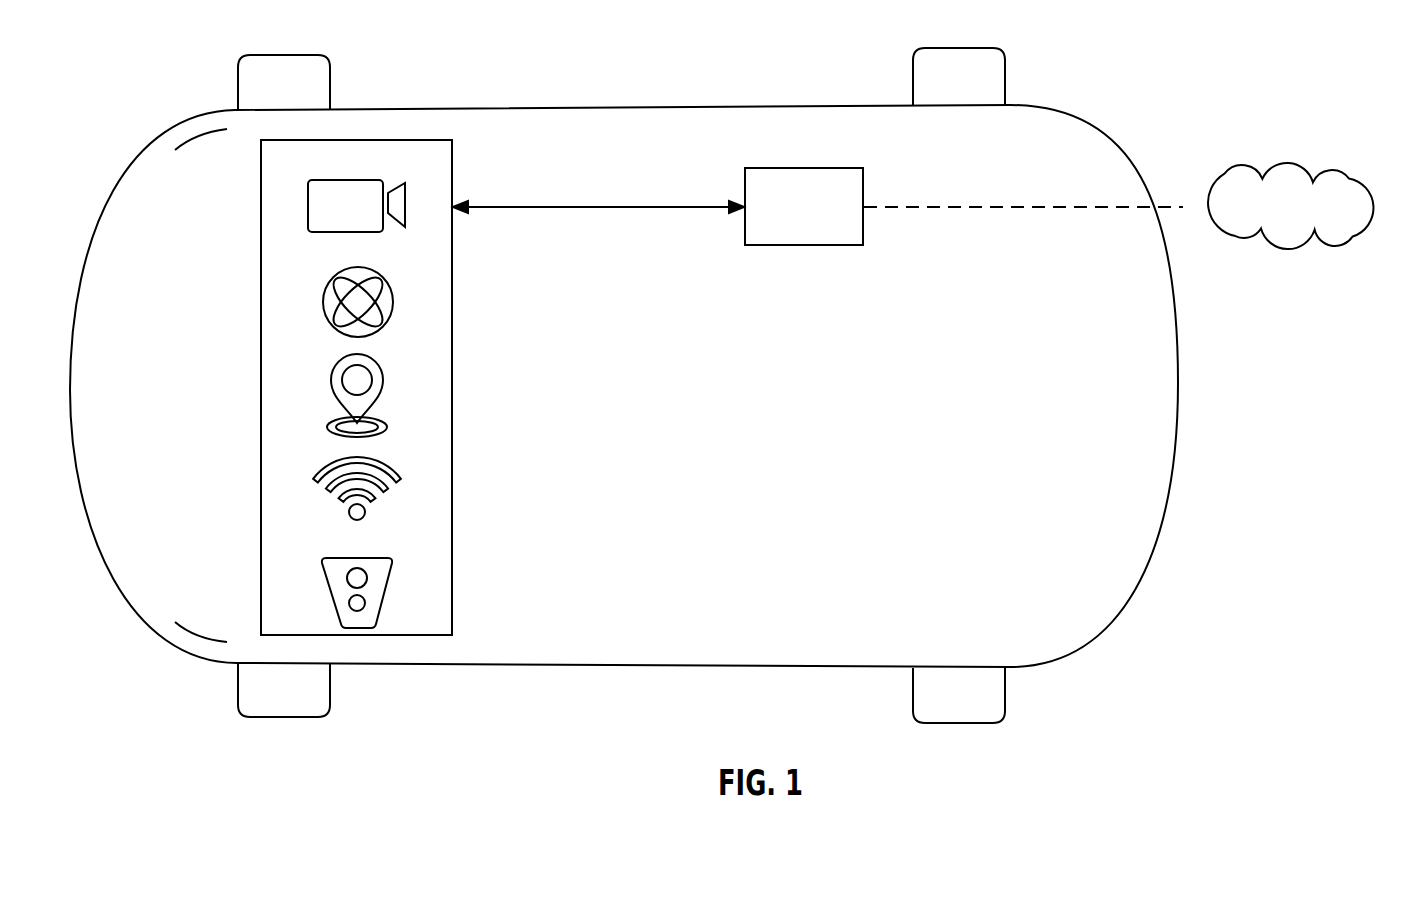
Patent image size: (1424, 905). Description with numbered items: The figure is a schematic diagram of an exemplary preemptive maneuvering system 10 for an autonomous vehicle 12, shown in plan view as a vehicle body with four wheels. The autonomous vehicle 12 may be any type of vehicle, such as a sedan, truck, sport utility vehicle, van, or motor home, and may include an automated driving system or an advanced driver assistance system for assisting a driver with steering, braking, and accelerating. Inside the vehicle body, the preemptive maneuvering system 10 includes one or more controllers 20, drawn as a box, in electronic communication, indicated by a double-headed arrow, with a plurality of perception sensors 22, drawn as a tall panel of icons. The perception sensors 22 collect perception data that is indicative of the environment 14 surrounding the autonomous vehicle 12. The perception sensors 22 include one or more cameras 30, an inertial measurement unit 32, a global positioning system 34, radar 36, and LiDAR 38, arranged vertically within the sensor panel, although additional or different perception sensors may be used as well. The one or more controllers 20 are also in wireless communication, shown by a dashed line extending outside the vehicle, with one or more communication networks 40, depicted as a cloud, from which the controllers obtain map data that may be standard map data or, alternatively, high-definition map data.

The preemptive maneuvering system 10 is at (693, 134).
The autonomous vehicle 12 is at (543, 665).
The environment 14 is at (1336, 116).
The controller 20 is at (820, 224).
The perception sensors 22 is at (260, 297).
The camera 30 is at (331, 179).
The inertial measurement unit 32 is at (340, 271).
The global positioning system 34 is at (334, 366).
The radar 36 is at (332, 468).
The LiDAR 38 is at (338, 557).
The communication network 40 is at (1301, 224).